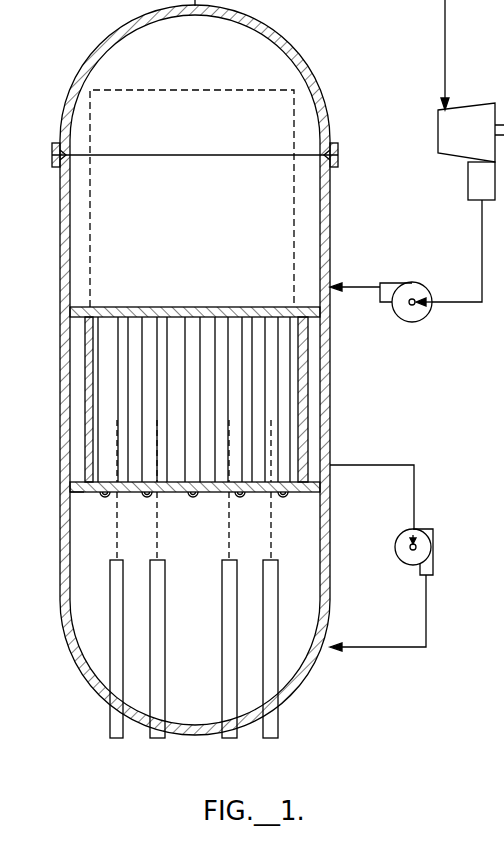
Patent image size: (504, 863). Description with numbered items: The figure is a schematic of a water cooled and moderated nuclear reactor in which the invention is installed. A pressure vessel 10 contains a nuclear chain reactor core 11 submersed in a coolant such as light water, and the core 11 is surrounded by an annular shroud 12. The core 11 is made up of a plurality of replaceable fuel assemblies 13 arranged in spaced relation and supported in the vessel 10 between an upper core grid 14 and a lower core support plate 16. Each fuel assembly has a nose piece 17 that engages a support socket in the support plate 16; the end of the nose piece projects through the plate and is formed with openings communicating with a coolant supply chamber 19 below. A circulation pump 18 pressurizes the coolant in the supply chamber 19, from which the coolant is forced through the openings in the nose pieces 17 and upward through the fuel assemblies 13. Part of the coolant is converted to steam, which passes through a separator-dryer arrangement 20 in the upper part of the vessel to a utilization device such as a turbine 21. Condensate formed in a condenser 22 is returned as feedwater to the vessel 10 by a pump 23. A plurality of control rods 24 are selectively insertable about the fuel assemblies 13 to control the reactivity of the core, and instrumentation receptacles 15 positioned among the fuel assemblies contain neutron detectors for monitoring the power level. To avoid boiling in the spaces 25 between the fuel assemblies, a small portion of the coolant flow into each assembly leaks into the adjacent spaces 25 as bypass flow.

The pressure vessel 10 is at (63, 346).
The nuclear chain reactor core 11 is at (88, 410).
The annular shroud 12 is at (88, 460).
The fuel assemblies 13 is at (98, 377).
The upper core grid 14 is at (82, 310).
The instrumentation receptacles 15 is at (272, 415).
The lower core support plate 16 is at (84, 493).
The nose piece 17 is at (106, 496).
The circulation pump 18 is at (433, 547).
The coolant supply chamber 19 is at (306, 536).
The separator-dryer arrangement 20 is at (90, 224).
The turbine 21 is at (438, 128).
The condenser 22 is at (468, 183).
The pump 23 is at (412, 283).
The control rods 24 is at (117, 550).
The spaces 25 is at (277, 383).